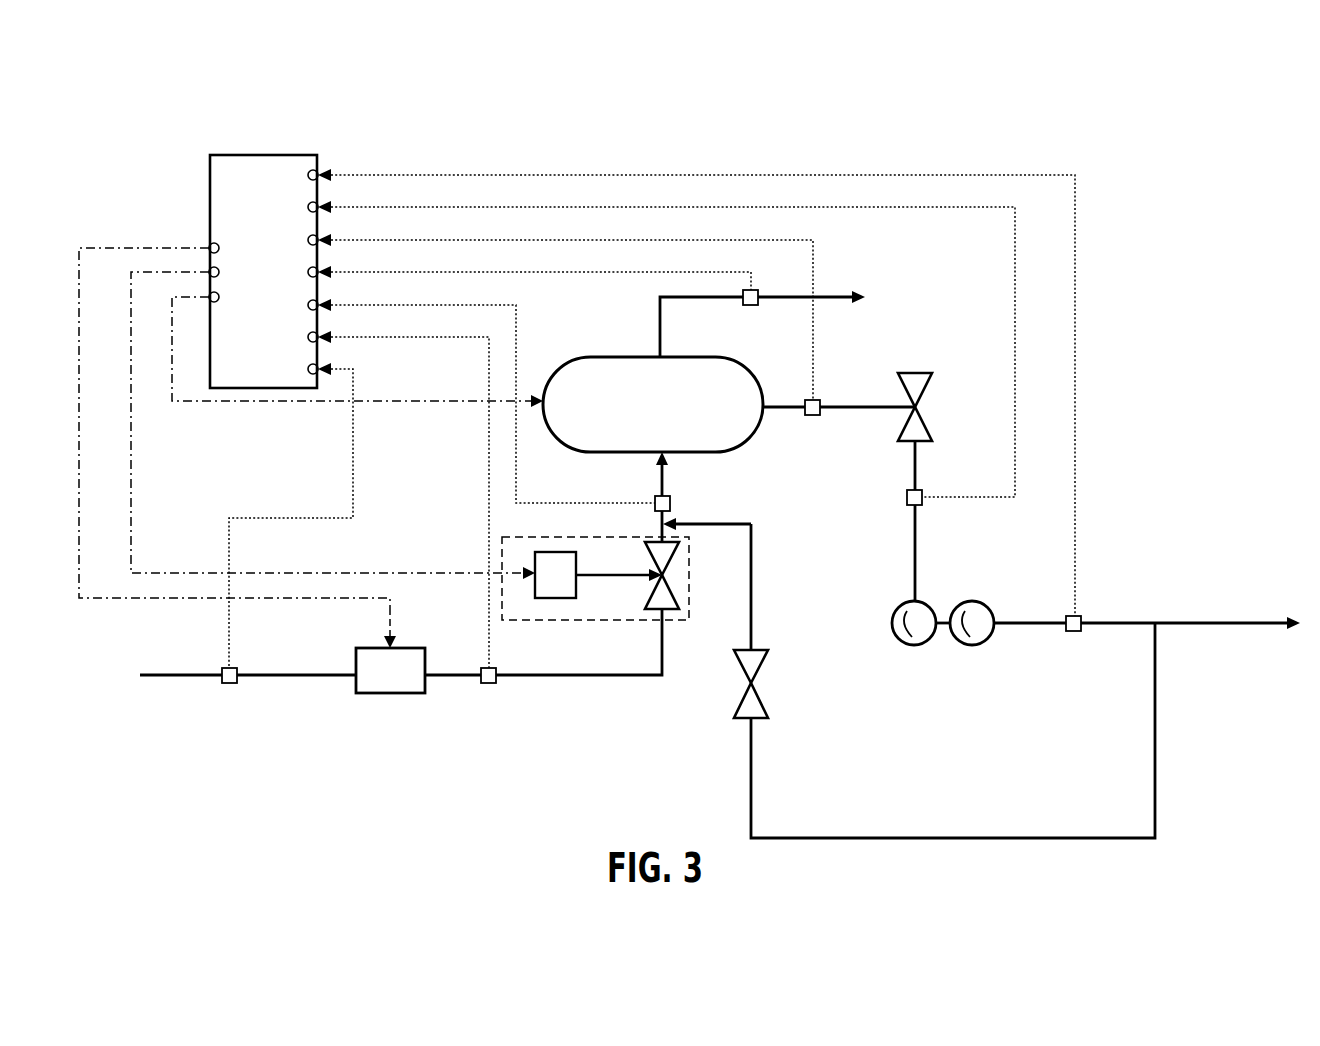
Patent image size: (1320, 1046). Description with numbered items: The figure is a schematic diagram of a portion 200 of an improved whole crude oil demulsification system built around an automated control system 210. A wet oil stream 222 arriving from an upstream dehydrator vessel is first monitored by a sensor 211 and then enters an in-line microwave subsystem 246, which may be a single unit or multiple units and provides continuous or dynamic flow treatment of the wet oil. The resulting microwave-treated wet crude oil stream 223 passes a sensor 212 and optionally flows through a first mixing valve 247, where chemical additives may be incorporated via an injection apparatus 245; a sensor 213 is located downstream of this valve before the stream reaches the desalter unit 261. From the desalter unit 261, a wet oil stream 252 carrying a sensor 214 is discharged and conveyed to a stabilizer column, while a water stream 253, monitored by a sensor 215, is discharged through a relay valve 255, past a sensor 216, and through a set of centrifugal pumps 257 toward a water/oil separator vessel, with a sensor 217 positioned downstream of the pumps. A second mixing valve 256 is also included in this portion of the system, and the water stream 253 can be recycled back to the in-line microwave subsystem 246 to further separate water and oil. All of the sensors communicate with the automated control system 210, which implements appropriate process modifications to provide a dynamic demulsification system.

The portion of improved whole crude oil demulsification system 200 is at (176, 96).
The automated control system 210 is at (280, 281).
The sensor 211 is at (234, 684).
The sensor 212 is at (495, 684).
The sensor 213 is at (672, 505).
The sensor 214 is at (756, 306).
The sensor 215 is at (817, 416).
The sensor 216 is at (906, 497).
The sensor 217 is at (1077, 632).
The wet oil stream 222 is at (325, 672).
The microwave-treated wet crude oil stream 223 is at (532, 673).
The injection apparatus 245 is at (558, 552).
The in-line microwave subsystem 246 is at (408, 683).
The first mixing valve 247 is at (679, 560).
The wet oil stream 252 is at (656, 323).
The water stream 253 is at (854, 405).
The relay valve 255 is at (955, 402).
The second mixing valve 256 is at (769, 677).
The set of centrifugal pumps 257 is at (966, 647).
The desalter unit 261 is at (672, 416).